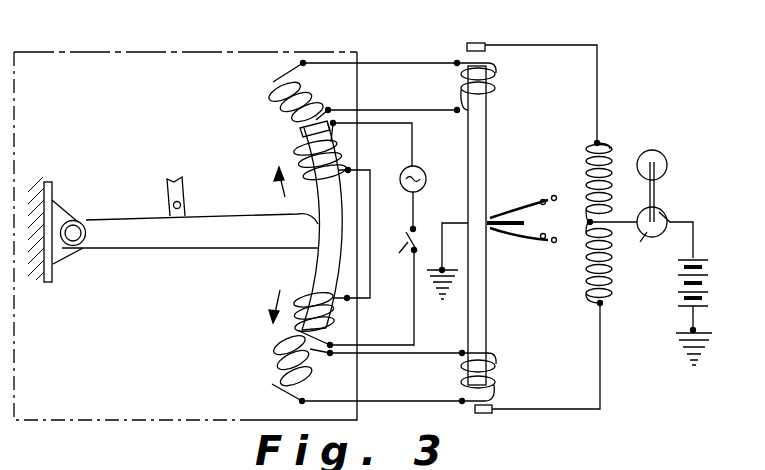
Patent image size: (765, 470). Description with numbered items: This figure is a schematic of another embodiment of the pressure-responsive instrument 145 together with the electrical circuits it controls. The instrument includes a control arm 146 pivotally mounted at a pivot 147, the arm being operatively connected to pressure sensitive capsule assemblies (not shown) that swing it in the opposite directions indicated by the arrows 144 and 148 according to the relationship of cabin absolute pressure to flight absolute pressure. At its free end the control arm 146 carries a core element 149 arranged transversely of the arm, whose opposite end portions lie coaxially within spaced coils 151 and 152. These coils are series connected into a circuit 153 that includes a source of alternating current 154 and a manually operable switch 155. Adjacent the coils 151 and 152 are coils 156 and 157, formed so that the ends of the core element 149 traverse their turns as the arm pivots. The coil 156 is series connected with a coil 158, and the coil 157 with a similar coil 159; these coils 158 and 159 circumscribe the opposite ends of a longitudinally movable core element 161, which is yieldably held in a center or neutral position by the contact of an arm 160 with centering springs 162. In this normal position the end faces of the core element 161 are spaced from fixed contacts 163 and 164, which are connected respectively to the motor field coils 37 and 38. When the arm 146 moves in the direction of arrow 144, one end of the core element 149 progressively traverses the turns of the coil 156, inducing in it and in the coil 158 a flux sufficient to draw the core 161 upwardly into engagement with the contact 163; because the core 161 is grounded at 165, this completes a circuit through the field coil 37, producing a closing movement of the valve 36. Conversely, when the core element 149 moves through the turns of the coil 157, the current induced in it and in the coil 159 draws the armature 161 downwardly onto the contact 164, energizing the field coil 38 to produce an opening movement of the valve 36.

The valve 36 is at (660, 153).
The motor field coil 37 is at (605, 150).
The motor field coil 38 is at (606, 266).
The arrow 144 is at (265, 172).
The instrument 145 is at (100, 418).
The control arm 146 is at (183, 240).
The pivot mounting 147 is at (76, 222).
The arrow 148 is at (257, 306).
The core element 149 is at (323, 250).
The coil 151 is at (298, 141).
The coil 152 is at (297, 326).
The circuit 153 is at (418, 329).
The source of alternating current 154 is at (418, 165).
The manually operable switch 155 is at (399, 247).
The coil 156 is at (273, 82).
The coil 157 is at (272, 383).
The coil 158 is at (498, 82).
The coil 159 is at (495, 372).
The arm 160 is at (527, 224).
The core element 161 is at (481, 162).
The centering springs 162 is at (522, 205).
The fixed contact 163 is at (480, 42).
The fixed contact 164 is at (483, 413).
The ground 165 is at (457, 269).